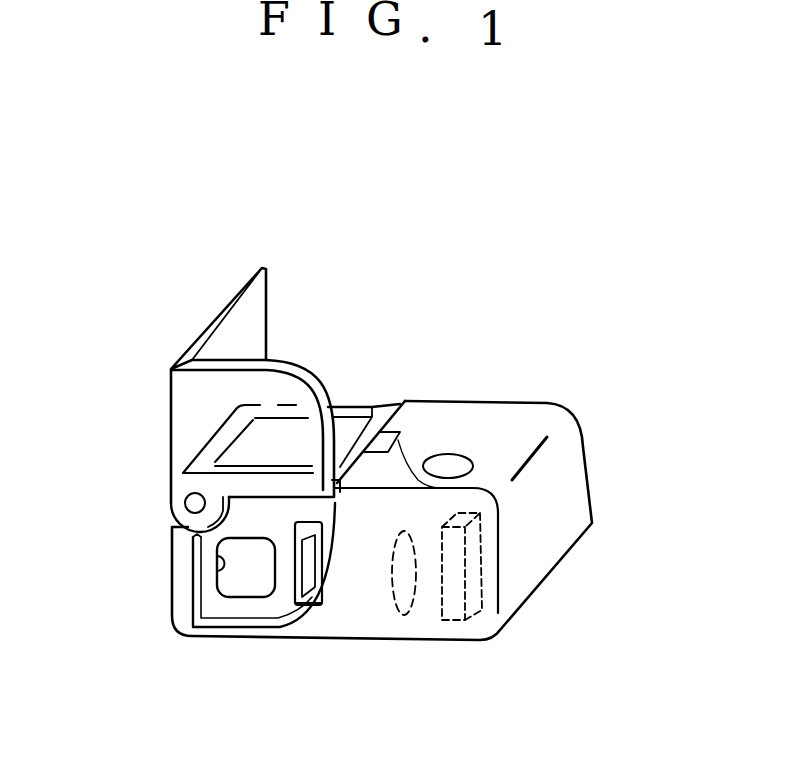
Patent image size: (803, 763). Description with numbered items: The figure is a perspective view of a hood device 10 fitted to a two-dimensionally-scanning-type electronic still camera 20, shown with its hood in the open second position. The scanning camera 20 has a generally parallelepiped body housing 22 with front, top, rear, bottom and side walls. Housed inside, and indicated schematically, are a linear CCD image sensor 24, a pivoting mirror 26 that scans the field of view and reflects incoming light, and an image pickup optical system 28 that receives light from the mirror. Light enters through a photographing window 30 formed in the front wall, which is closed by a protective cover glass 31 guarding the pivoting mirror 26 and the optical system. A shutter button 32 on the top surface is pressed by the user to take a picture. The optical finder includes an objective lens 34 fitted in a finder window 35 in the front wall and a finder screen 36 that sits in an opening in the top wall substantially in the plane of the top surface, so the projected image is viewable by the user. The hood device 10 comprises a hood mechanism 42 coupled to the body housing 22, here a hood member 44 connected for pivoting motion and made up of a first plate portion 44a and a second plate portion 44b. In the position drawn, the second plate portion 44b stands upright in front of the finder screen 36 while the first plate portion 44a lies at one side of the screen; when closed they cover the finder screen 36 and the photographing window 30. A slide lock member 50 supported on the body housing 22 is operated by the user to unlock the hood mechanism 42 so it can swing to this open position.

The hood device 10 is at (341, 288).
The electronic still camera 20 is at (601, 340).
The body housing 22 is at (420, 413).
The linear CCD image sensor 24 is at (453, 617).
The pivoting mirror 26 is at (303, 607).
The image pickup optical system 28 is at (408, 607).
The photographing window 30 is at (293, 587).
The cover glass 31 is at (308, 585).
The shutter button 32 is at (453, 470).
The objective lens 34 is at (240, 585).
The finder window 35 is at (222, 571).
The finder screen 36 is at (347, 433).
The hood mechanism 42 is at (166, 333).
The hood member 44 is at (172, 408).
The first plate portion 44a is at (252, 307).
The second plate portion 44b is at (190, 440).
The slide lock member 50 is at (477, 488).